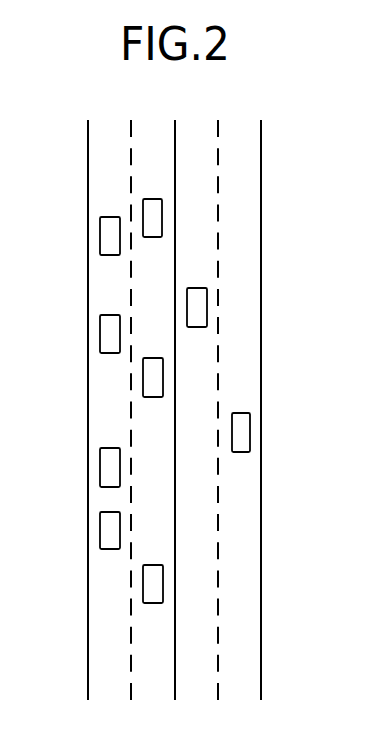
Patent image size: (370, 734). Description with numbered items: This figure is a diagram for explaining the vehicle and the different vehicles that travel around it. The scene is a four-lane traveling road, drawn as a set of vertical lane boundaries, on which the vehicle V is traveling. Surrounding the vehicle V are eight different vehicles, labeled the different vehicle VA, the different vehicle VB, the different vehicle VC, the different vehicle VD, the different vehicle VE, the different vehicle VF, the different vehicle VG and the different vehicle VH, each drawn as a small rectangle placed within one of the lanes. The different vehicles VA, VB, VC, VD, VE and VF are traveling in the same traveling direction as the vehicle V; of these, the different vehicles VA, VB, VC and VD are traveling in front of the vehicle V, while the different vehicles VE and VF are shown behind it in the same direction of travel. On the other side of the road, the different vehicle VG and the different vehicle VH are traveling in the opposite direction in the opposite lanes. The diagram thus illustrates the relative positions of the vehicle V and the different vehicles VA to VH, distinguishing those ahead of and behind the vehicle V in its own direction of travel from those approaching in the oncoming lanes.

The different vehicle VA is at (162, 218).
The different vehicle VB is at (100, 232).
The different vehicle VC is at (100, 328).
The different vehicle VD is at (143, 375).
The vehicle V is at (100, 460).
The different vehicle VE is at (100, 524).
The different vehicle VF is at (143, 581).
The different vehicle VG is at (207, 306).
The different vehicle VH is at (250, 430).